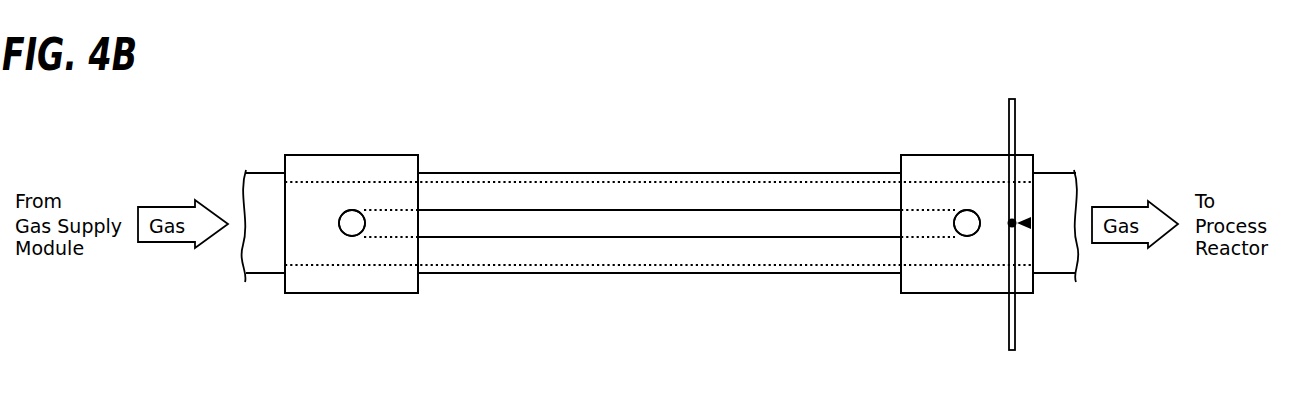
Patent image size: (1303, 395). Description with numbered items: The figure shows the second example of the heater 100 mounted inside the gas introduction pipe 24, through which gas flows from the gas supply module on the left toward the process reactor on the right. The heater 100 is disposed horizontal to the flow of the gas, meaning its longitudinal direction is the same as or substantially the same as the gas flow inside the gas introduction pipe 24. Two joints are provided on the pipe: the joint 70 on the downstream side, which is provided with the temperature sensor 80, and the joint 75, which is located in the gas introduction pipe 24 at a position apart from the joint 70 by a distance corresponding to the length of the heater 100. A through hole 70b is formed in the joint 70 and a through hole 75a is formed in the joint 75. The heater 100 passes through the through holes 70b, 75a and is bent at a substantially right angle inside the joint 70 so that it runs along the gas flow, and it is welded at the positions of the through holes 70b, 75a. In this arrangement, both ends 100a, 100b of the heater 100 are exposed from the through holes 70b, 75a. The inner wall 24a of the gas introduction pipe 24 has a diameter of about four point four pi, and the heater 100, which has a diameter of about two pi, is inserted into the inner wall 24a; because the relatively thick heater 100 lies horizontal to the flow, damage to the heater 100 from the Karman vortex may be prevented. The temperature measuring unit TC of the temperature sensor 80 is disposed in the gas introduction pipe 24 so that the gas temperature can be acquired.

The gas introduction pipe 24 is at (480, 274).
The inner wall 24a is at (750, 182).
The joint 70 is at (1033, 293).
The through hole 70b is at (976, 211).
The joint 75 is at (285, 293).
The through hole 75a is at (343, 212).
The temperature sensor 80 is at (1015, 327).
The heater 100 is at (587, 237).
The one end of the heater 100a is at (967, 223).
The other end of the heater 100b is at (352, 223).
The temperature measuring unit TC is at (1030, 223).